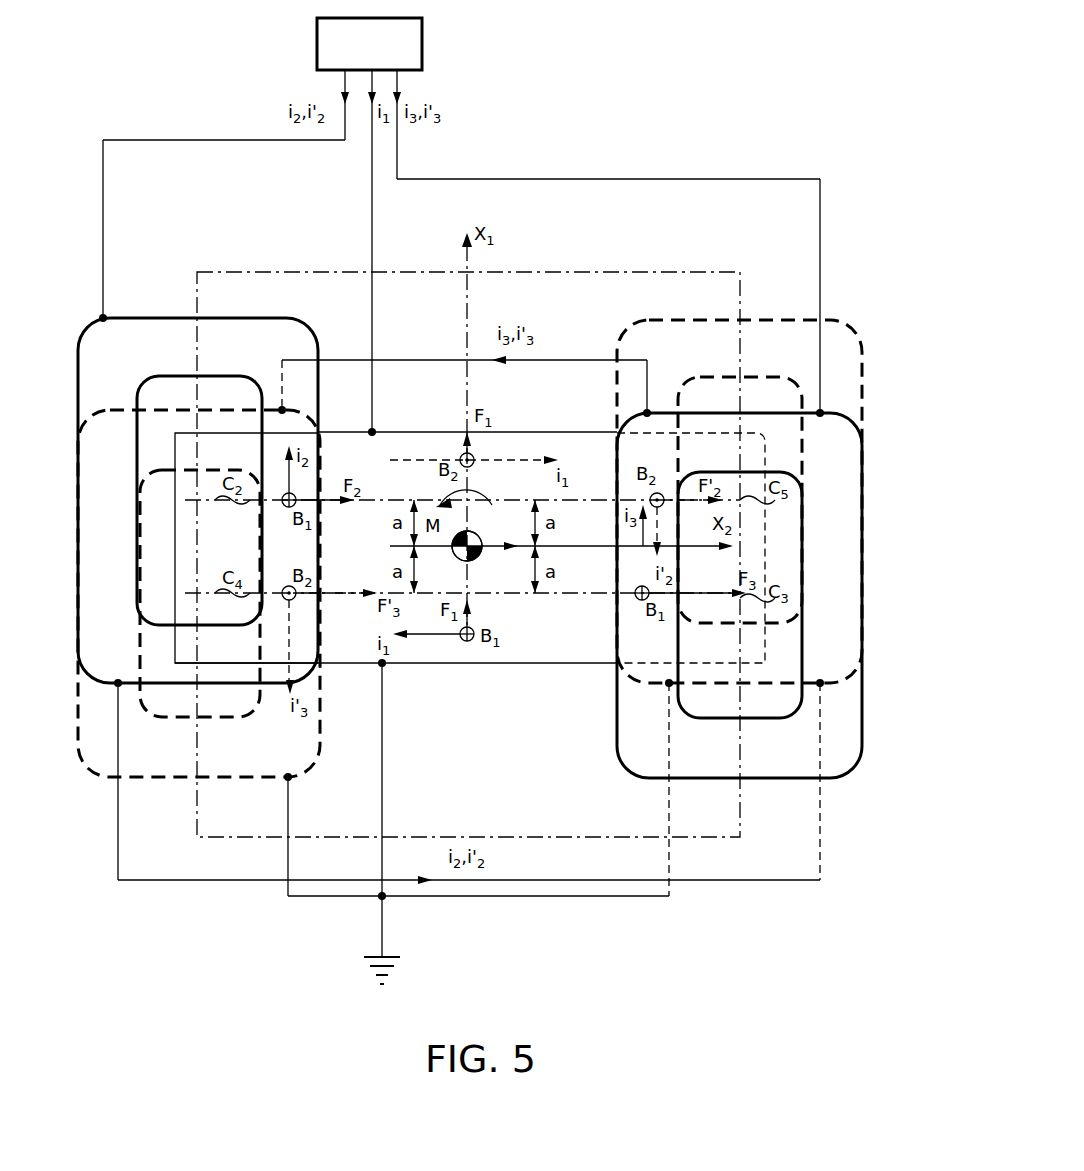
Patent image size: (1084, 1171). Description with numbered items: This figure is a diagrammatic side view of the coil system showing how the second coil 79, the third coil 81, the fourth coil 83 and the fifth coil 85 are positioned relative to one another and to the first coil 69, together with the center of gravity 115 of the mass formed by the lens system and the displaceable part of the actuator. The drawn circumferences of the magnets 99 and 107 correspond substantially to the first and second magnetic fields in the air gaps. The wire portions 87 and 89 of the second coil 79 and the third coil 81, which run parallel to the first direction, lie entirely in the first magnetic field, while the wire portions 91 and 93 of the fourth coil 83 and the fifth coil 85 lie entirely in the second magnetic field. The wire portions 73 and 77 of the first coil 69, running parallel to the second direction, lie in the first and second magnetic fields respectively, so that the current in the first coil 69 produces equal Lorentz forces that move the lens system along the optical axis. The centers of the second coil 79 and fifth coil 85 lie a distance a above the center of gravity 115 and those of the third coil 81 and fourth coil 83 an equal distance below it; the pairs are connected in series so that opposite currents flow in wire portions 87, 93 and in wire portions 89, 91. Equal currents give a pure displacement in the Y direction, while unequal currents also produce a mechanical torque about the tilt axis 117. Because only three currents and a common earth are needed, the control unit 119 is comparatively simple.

The control unit 119 is at (406, 37).
The second coil 79 is at (161, 335).
The third coil 81 is at (768, 768).
The fourth coil 83 is at (243, 760).
The fifth coil 85 is at (775, 330).
The wire portion of the second coil 87 is at (275, 530).
The wire portion of the third coil 89 is at (627, 628).
The wire portion of the fourth coil 91 is at (308, 692).
The wire portion of the fifth coil 93 is at (620, 394).
The first coil 69 is at (396, 687).
The wire portion of the first coil 73 is at (396, 687).
The wire portion of the first coil 77 is at (485, 657).
The magnet 99 is at (478, 891).
The magnet 107 is at (547, 842).
The center of gravity 115 is at (480, 536).
The tilt axis 117 is at (461, 553).